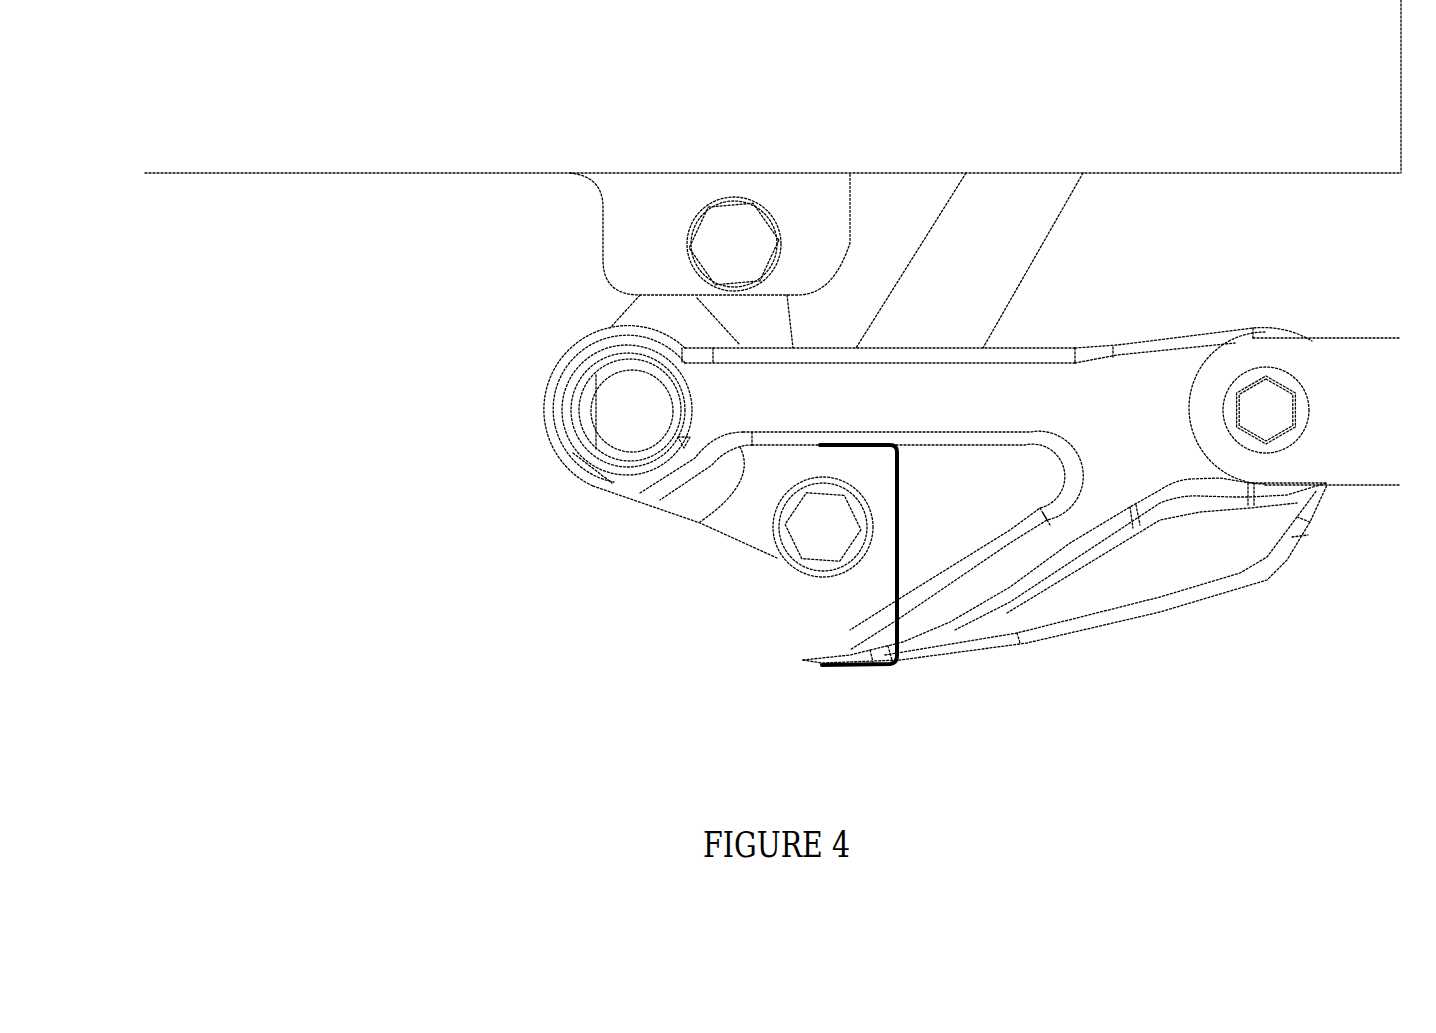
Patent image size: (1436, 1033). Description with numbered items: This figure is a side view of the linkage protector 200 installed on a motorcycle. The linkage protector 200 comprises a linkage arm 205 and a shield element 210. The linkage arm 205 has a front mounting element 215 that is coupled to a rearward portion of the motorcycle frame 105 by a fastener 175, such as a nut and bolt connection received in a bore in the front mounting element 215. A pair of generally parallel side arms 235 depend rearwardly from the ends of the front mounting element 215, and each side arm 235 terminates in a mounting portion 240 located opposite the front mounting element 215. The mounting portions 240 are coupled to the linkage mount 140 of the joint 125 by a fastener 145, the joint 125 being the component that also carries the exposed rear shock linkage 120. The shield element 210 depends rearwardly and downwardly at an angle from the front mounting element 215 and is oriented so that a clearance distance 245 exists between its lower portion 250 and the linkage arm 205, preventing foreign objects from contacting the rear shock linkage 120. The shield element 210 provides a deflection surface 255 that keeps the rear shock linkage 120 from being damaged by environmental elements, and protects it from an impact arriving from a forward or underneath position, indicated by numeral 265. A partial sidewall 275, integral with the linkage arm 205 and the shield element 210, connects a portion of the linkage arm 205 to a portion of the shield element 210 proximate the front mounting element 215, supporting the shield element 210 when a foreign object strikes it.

The frame 105 is at (1347, 457).
The exposed rear shock linkage 120 is at (902, 463).
The joint 125 is at (728, 568).
The linkage mount 140 is at (672, 500).
The fastener 145 is at (615, 390).
The fastener 175 is at (1275, 408).
The linkage protector 200 is at (1163, 273).
The linkage arm 205 is at (1063, 345).
The shield element 210 is at (1193, 652).
The front mounting element 215 is at (1277, 312).
The side arms 235 is at (837, 385).
The mounting portion 240 is at (556, 392).
The clearance distance 245 is at (900, 535).
The lower portion 250 is at (838, 670).
The deflection surface 255 is at (1075, 622).
The impact from a forward or underneath position 265 is at (1293, 582).
The sidewall 275 is at (1007, 572).